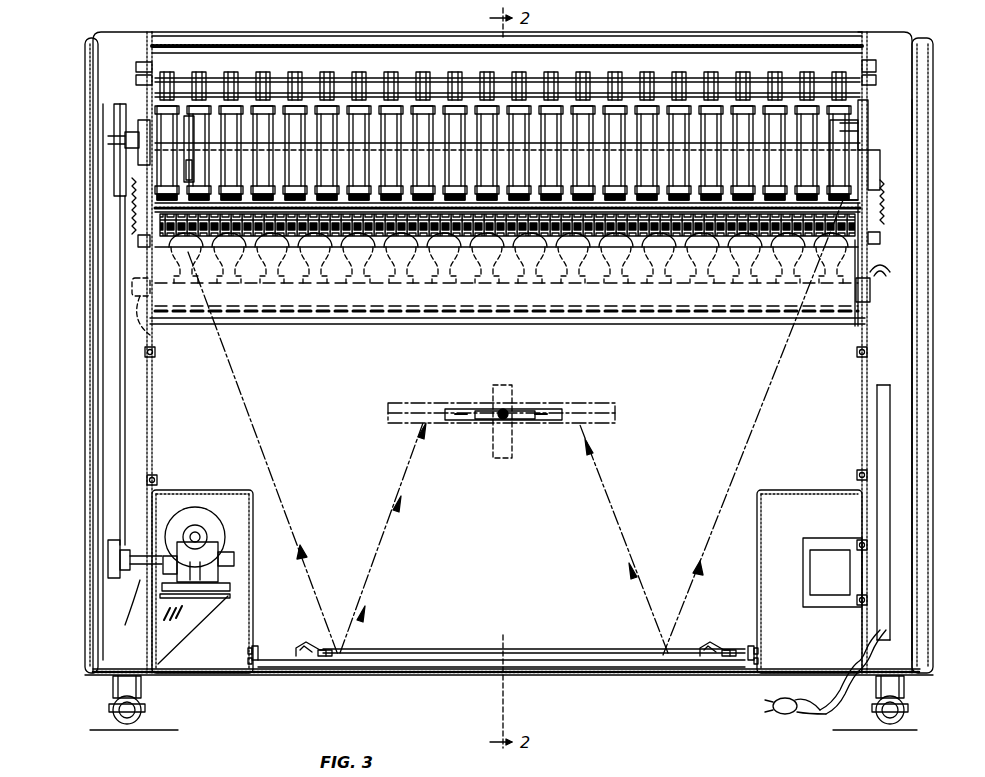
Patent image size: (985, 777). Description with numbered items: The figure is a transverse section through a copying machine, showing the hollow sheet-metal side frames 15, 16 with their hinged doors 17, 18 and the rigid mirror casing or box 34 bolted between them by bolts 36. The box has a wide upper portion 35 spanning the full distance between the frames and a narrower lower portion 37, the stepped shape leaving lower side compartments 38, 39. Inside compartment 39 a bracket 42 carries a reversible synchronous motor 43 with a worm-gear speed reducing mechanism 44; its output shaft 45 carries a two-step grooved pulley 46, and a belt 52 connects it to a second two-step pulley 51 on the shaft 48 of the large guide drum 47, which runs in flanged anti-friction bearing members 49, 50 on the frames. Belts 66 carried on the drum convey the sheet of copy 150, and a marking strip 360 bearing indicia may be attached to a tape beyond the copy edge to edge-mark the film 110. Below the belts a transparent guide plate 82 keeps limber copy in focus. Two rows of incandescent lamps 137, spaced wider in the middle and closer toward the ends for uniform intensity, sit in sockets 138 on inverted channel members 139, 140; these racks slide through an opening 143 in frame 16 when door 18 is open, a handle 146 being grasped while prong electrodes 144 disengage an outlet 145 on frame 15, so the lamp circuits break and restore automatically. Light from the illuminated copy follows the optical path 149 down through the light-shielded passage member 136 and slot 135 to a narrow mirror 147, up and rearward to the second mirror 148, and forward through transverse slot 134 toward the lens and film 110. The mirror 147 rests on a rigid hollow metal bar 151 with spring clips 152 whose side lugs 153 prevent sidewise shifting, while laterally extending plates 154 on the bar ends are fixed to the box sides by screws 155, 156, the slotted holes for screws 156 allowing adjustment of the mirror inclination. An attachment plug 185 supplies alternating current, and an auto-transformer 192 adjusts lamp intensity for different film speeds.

The side frame 15 is at (120, 36).
The side frame 16 is at (904, 36).
The hinged door 17 is at (85, 128).
The hinged door 18 is at (930, 86).
The mirror casing or box 34 is at (794, 492).
The upper portion 35 is at (885, 432).
The bolts 36 is at (158, 478).
The lower portion 37 is at (292, 580).
The lower side compartment 38 is at (768, 670).
The lower side compartment 39 is at (214, 666).
The bracket 42 is at (220, 612).
The reversible synchronous motor 43 is at (240, 498).
The worm-gear speed reducing mechanism 44 is at (210, 558).
The output shaft 45 is at (128, 610).
The two-step grooved pulley 46 is at (108, 560).
The guide drum 47 is at (270, 115).
The shaft 48 is at (108, 142).
The flanged anti-friction bearing member 49 is at (140, 120).
The flanged anti-friction bearing member 50 is at (868, 136).
The two-step grooved pulley 51 is at (114, 180).
The belt 52 is at (125, 352).
The belts 66 is at (628, 78).
The transparent guide plate 82 is at (850, 212).
The film 110 is at (510, 388).
The transverse slot 134 is at (520, 414).
The slot 135 is at (770, 324).
The light-shielded passage member 136 is at (150, 262).
The incandescent lamps 137 is at (760, 255).
The sockets 138 is at (700, 280).
The inverted channel member 139 is at (648, 316).
The inverted channel member 140 is at (870, 292).
The opening 143 is at (860, 248).
The prong electrodes 144 is at (156, 348).
The outlet 145 is at (135, 296).
The handle 146 is at (890, 266).
The narrow mirror 147 is at (604, 654).
The second narrow mirror 148 is at (610, 422).
The optical path 149 is at (272, 442).
The copy 150 is at (872, 162).
The hollow metal bar 151 is at (386, 668).
The spring clips 152 is at (306, 644).
The side lugs 153 is at (330, 632).
The laterally extending plates 154 is at (256, 646).
The screws 155 is at (250, 664).
The screws 156 is at (252, 670).
The attachment plug 185 is at (788, 714).
The auto-transformer 192 is at (808, 578).
The marking strip 360 is at (189, 116).